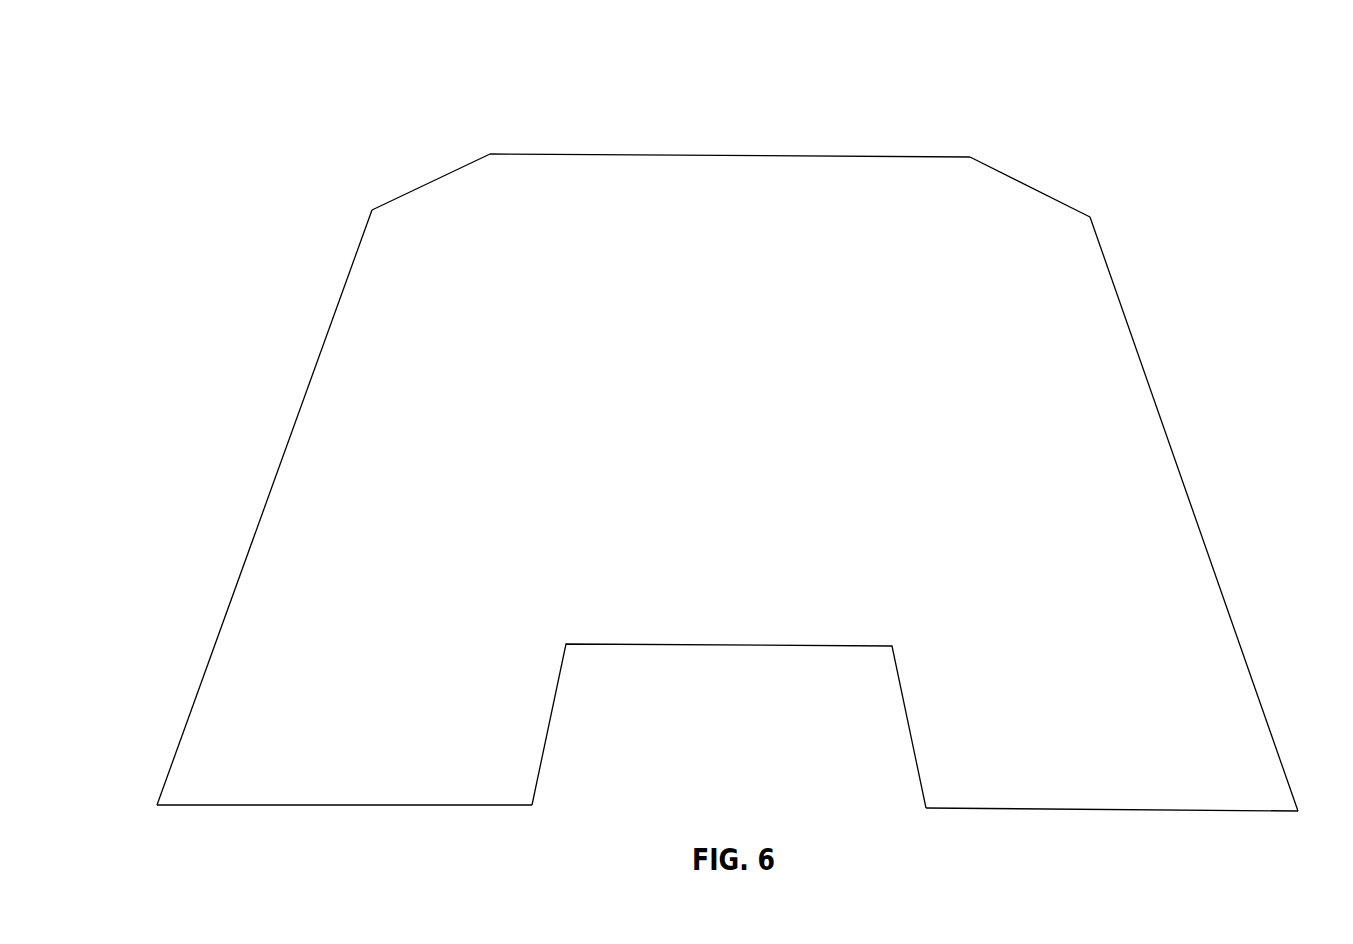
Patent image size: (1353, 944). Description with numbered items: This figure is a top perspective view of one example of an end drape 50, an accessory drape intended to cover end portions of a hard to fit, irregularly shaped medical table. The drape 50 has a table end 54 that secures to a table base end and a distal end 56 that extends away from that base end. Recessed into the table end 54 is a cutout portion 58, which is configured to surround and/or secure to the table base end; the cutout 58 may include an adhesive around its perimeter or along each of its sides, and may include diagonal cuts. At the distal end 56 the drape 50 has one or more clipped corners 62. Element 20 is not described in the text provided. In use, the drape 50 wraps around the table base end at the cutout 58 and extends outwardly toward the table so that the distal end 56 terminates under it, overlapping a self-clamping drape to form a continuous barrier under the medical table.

The blank / sheet body 20 is at (1075, 487).
The end drape 50 is at (740, 62).
The table end 54 is at (410, 806).
The distal end 56 is at (790, 157).
The cutout portion 58 is at (762, 732).
The clipped corners 62 is at (420, 187).